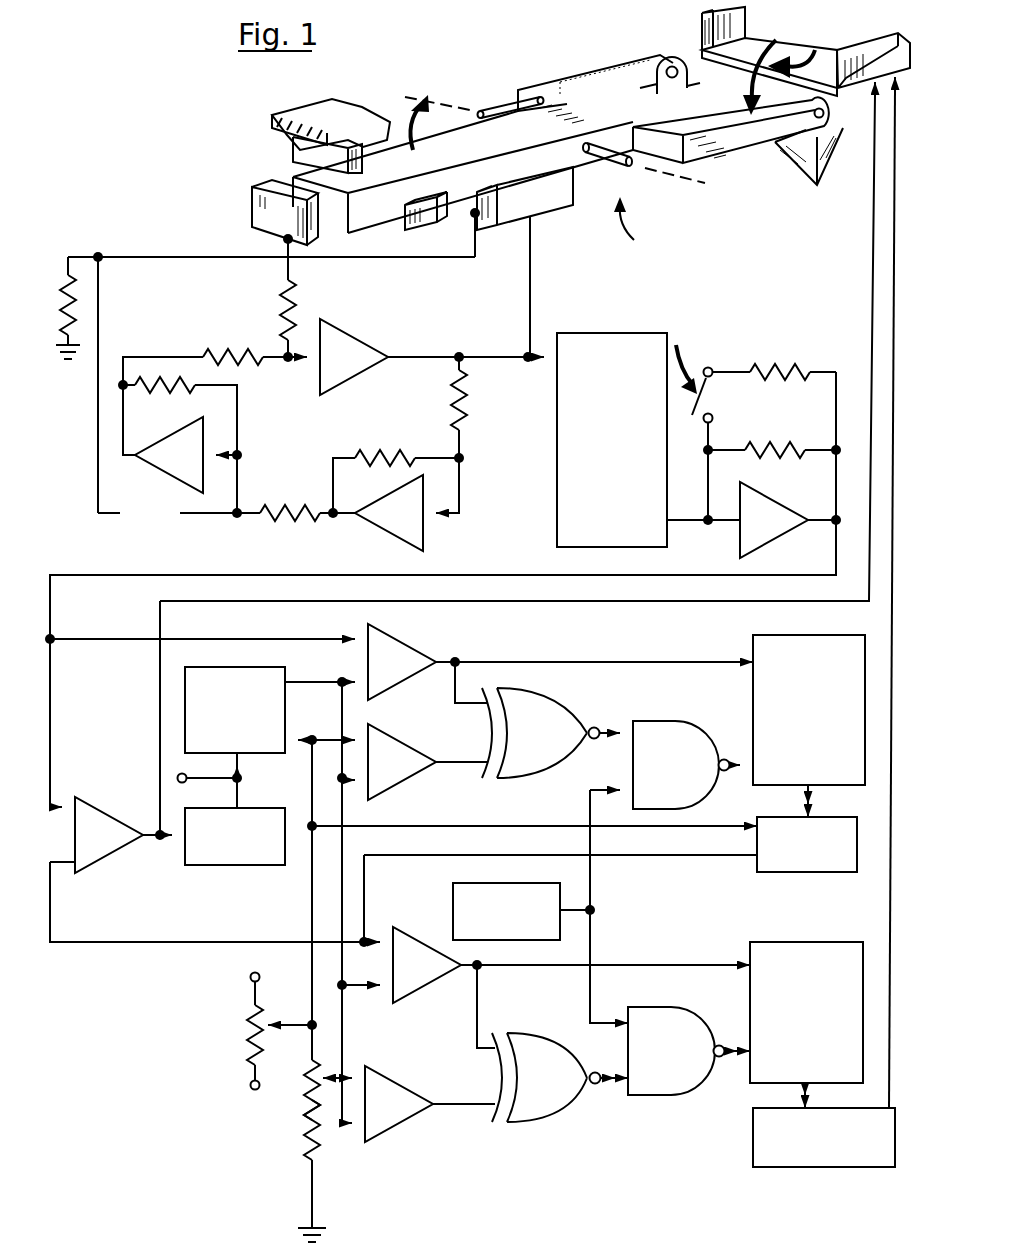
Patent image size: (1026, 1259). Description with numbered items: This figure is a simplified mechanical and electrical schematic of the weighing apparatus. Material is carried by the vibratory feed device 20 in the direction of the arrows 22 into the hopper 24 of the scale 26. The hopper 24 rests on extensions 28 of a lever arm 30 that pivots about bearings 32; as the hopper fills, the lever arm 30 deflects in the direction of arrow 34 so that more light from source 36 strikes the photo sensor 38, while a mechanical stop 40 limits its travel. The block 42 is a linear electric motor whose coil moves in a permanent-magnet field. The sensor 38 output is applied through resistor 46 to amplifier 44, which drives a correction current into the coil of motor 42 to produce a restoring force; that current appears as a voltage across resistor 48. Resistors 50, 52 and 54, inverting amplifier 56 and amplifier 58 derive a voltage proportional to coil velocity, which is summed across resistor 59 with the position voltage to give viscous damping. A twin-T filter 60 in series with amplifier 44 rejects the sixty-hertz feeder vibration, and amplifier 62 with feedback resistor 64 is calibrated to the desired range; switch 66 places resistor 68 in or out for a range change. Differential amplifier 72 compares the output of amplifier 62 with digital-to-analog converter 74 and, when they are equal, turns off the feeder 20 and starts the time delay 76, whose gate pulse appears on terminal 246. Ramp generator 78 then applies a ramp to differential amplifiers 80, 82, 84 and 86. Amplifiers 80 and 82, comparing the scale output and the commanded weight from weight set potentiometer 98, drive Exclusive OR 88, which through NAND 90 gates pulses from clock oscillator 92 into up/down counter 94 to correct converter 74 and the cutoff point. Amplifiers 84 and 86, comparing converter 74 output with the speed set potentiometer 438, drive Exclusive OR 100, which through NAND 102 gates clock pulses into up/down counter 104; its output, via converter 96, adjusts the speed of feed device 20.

The feed device 20 is at (703, 36).
The arrows 22 is at (798, 50).
The hopper 24 is at (786, 176).
The scale/force balance 26 is at (638, 224).
The extensions 28 is at (628, 62).
The lever arm 30 is at (540, 85).
The bearings 32 is at (455, 108).
The arrow 34 is at (407, 110).
The light source 36 is at (437, 225).
The photo sensor 38 is at (252, 210).
The mechanical stop 40 is at (294, 108).
The linear electric motor 42 is at (573, 195).
The amplifier 44 is at (362, 346).
The resistor 46 is at (286, 300).
The resistor 48 is at (95, 256).
The resistor 50 is at (462, 411).
The resistor 52 is at (270, 513).
The resistor 54 is at (172, 396).
The amplifier 56 is at (365, 530).
The amplifier 58 is at (158, 477).
The resistor 59 is at (240, 352).
The filter 60 is at (628, 333).
The amplifier 62 is at (780, 536).
The feedback resistor 64 is at (782, 456).
The switch 66 is at (692, 377).
The resistor 68 is at (792, 361).
The differential amplifier 72 is at (105, 859).
The digital-to-analog converter 74 is at (757, 876).
The time delay circuit 76 is at (230, 866).
The ramp generator 78 is at (275, 668).
The differential amplifier 80 is at (405, 651).
The differential amplifier 82 is at (405, 782).
The differential amplifier 84 is at (415, 991).
The differential amplifier 86 is at (390, 1128).
The Exclusive OR 88 is at (548, 706).
The NAND 90 is at (682, 723).
The clock oscillator 92 is at (453, 891).
The up/down counter 94 is at (753, 640).
The digital-to-analog converter 96 is at (753, 1159).
The weight set potentiometer 98 is at (242, 1037).
The Exclusive OR 100 is at (555, 1121).
The NAND 102 is at (668, 1101).
The up/down counter 104 is at (785, 942).
The terminal 246 is at (192, 786).
The speed set potentiometer 438 is at (305, 1109).